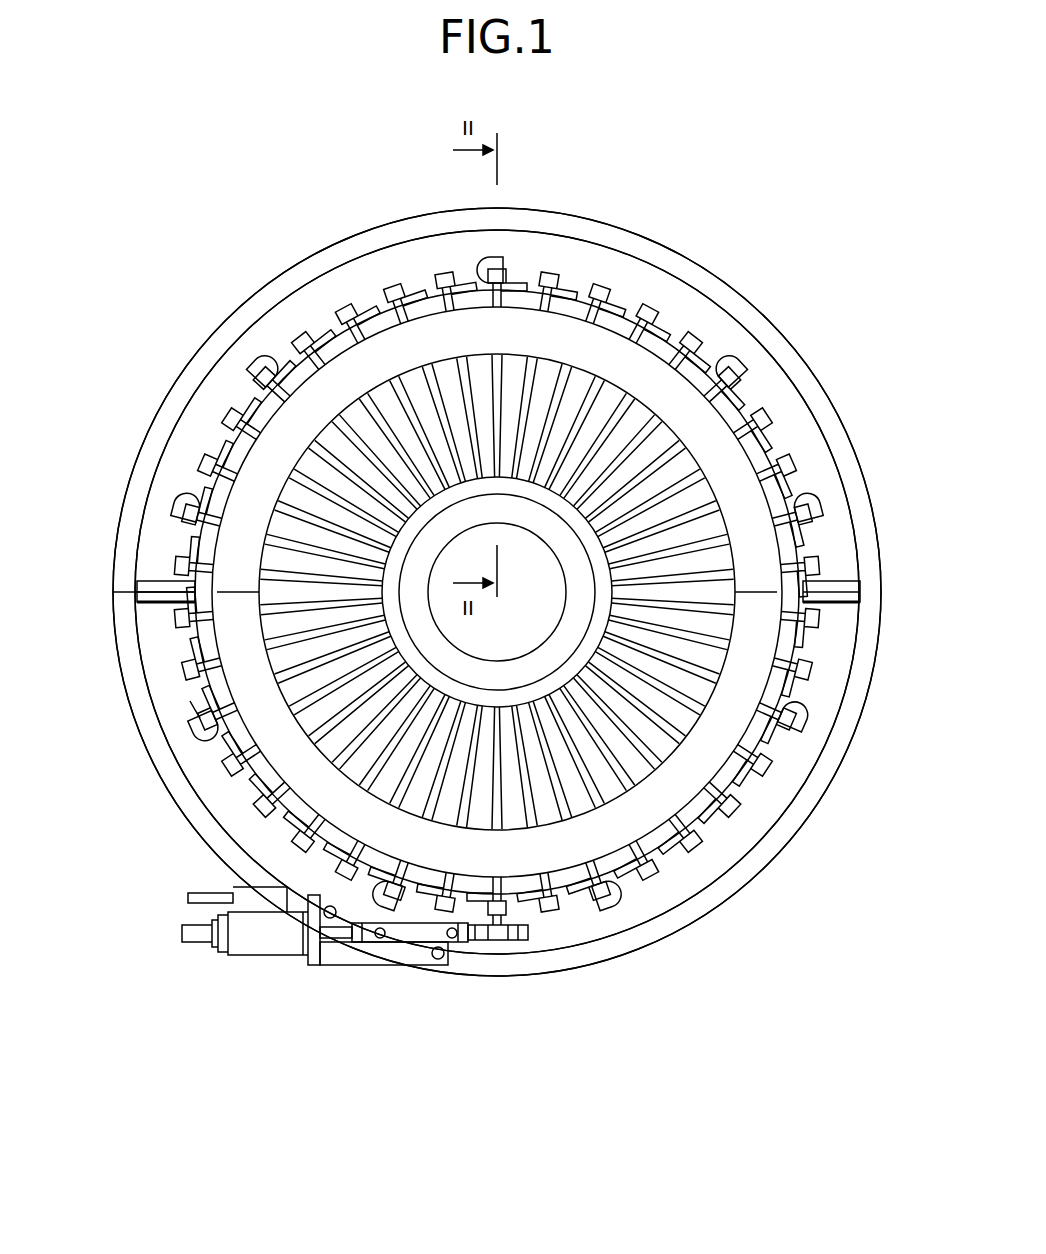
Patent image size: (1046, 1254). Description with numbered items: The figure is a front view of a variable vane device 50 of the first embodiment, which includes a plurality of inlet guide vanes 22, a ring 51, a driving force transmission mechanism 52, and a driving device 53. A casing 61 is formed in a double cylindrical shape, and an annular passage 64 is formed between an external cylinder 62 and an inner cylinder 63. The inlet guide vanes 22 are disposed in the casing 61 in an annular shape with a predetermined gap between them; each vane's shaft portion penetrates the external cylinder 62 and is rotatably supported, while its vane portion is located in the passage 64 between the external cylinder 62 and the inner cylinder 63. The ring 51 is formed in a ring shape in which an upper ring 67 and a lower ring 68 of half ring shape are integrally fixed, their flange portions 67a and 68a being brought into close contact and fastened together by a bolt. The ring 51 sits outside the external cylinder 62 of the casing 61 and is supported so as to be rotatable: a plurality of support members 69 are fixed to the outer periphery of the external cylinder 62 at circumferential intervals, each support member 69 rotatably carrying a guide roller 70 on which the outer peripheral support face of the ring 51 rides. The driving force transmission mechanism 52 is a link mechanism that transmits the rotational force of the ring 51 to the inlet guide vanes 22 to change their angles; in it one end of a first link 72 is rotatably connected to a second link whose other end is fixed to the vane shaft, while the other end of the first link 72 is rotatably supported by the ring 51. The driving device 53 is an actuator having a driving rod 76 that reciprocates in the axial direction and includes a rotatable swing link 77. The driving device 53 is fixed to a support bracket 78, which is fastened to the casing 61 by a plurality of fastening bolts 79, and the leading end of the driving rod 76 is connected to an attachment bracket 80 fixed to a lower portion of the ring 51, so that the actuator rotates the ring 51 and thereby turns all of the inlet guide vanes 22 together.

The inlet guide vane 22 is at (322, 470).
The variable vane device 50 is at (226, 261).
The ring 51 is at (798, 653).
The driving force transmission mechanism 52 is at (690, 452).
The driving device 53 is at (268, 957).
The casing 61 is at (625, 226).
The external cylinder 62 is at (601, 352).
The inner cylinder 63 is at (736, 554).
The annular passage 64 is at (788, 443).
The upper ring 67 is at (345, 342).
The flange portion 67a is at (858, 583).
The lower ring 68 is at (250, 728).
The flange portion 68a is at (857, 596).
The support member 69 is at (498, 258).
The guide roller 70 is at (490, 266).
The first link 72 is at (196, 706).
The driving rod 76 is at (512, 942).
The swing link 77 is at (426, 933).
The support bracket 78 is at (337, 950).
The fastening bolt 79 is at (330, 905).
The attachment bracket 80 is at (520, 932).